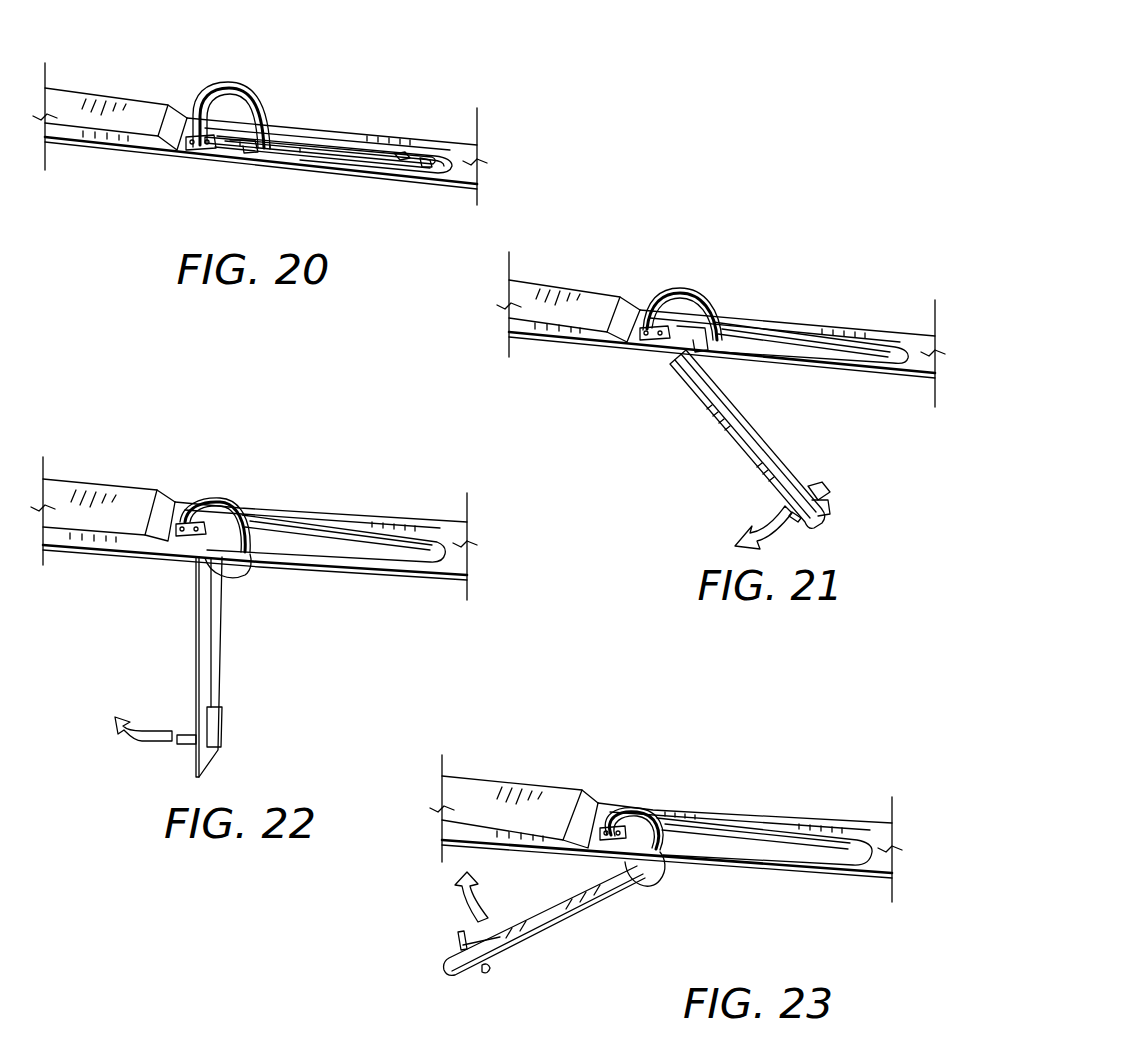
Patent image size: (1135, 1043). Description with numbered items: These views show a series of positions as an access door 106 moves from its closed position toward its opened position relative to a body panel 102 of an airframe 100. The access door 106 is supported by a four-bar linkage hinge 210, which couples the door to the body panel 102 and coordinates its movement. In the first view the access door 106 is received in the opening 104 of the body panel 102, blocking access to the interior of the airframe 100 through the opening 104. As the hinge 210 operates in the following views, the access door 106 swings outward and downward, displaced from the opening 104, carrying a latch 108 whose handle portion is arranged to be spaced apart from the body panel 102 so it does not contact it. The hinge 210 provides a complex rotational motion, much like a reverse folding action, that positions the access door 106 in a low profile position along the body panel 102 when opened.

In FIG. 20, the airframe 100 is at (530, 78).
In FIG. 21, the airframe 100 is at (880, 226).
In FIG. 22, the airframe 100 is at (382, 444).
In FIG. 23, the airframe 100 is at (826, 745).
In FIG. 20, the body panel 102 is at (447, 126).
In FIG. 21, the body panel 102 is at (896, 322).
In FIG. 22, the body panel 102 is at (446, 520).
In FIG. 23, the body panel 102 is at (866, 815).
In FIG. 20, the opening 104 is at (387, 148).
In FIG. 21, the opening 104 is at (782, 336).
In FIG. 22, the opening 104 is at (322, 540).
In FIG. 23, the opening 104 is at (757, 842).
In FIG. 20, the access door 106 is at (337, 135).
In FIG. 21, the access door 106 is at (795, 420).
In FIG. 22, the access door 106 is at (245, 655).
In FIG. 23, the access door 106 is at (560, 952).
In FIG. 20, the latch 108 is at (410, 173).
In FIG. 21, the latch 108 is at (840, 465).
In FIG. 22, the latch 108 is at (248, 728).
In FIG. 23, the latch 108 is at (498, 998).
In FIG. 20, the four-bar linkage hinge 210 is at (243, 72).
In FIG. 21, the four-bar linkage hinge 210 is at (686, 268).
In FIG. 22, the four-bar linkage hinge 210 is at (230, 478).
In FIG. 23, the four-bar linkage hinge 210 is at (643, 792).